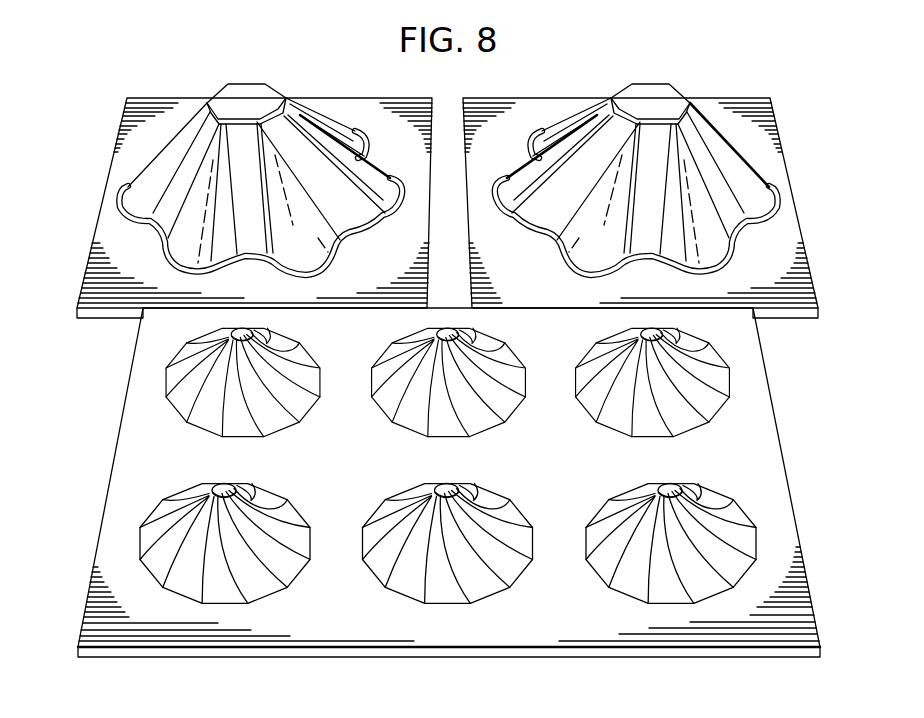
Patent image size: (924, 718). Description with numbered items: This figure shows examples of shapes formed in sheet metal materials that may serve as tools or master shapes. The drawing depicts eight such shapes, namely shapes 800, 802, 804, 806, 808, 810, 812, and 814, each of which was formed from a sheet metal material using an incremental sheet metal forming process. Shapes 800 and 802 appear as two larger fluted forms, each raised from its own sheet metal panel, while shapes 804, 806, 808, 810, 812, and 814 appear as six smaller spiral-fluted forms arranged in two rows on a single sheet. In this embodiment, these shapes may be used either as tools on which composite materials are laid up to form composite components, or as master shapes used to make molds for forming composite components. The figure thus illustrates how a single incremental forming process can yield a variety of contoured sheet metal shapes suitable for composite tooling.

The shape 800 is at (228, 96).
The shape 802 is at (668, 95).
The shape 804 is at (173, 378).
The shape 806 is at (147, 540).
The shape 808 is at (380, 563).
The shape 810 is at (733, 518).
The shape 812 is at (448, 331).
The shape 814 is at (712, 358).